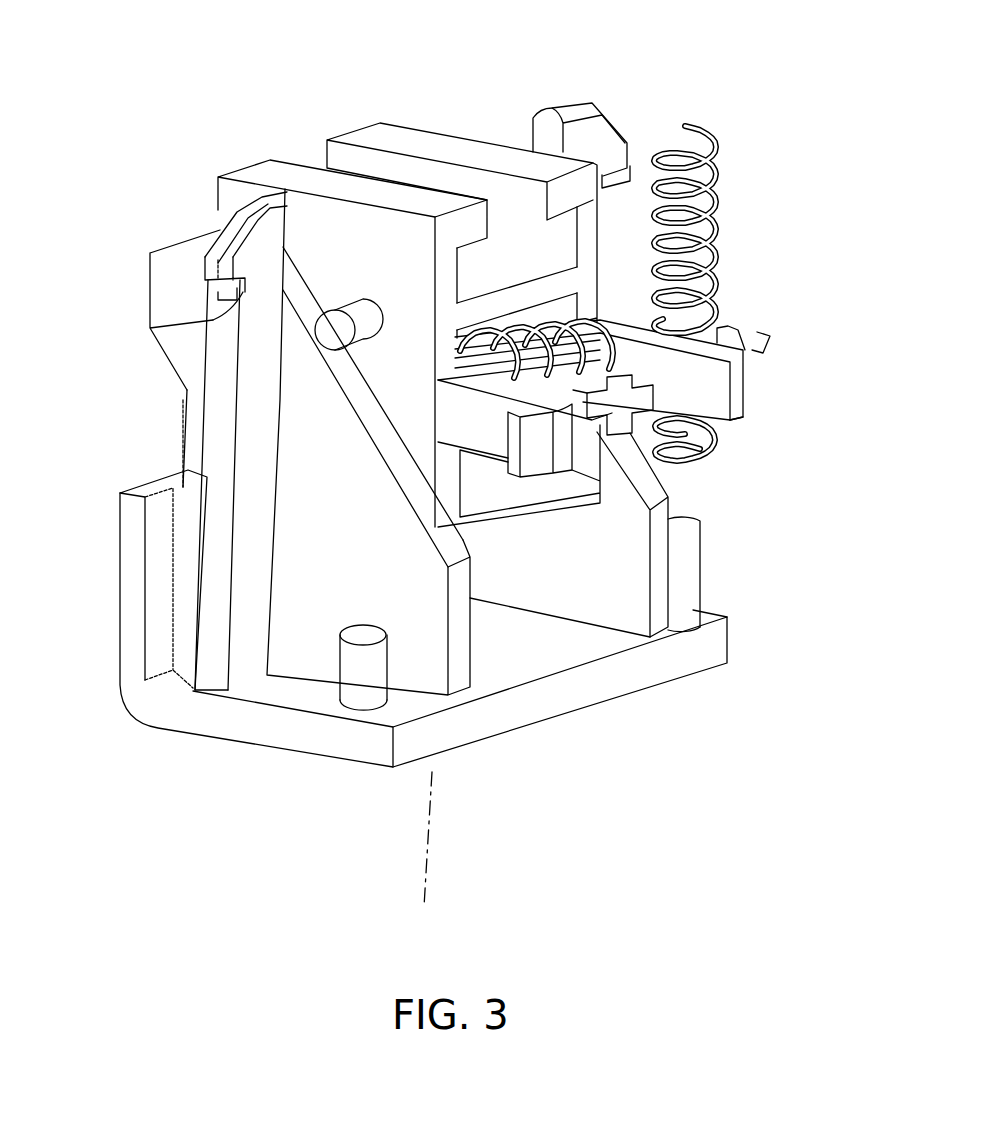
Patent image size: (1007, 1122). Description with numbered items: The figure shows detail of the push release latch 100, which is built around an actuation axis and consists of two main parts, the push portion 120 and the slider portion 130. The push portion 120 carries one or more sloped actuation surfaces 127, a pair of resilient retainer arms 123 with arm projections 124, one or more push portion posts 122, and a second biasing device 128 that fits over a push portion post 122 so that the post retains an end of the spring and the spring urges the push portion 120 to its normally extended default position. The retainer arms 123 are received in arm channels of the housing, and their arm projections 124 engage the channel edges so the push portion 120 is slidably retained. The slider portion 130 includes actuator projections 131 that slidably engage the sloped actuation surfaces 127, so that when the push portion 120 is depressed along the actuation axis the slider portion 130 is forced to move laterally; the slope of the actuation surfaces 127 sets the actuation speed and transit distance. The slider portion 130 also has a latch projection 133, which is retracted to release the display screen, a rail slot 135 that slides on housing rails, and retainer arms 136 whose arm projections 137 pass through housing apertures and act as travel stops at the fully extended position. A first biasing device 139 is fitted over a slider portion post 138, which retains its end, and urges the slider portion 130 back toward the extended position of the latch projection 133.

The push release latch 100 is at (183, 830).
The push portion 120 is at (645, 686).
The push portion posts 122 is at (358, 672).
The retainer arms 123 is at (205, 447).
The arm projections 124 is at (215, 320).
The sloped actuation surfaces 127 is at (658, 490).
The second biasing device 128 is at (710, 215).
The slider portion 130 is at (228, 172).
The actuator projections 131 is at (350, 312).
The latch projection 133 is at (150, 297).
The rail slot 135 is at (437, 272).
The retainer arms 136 is at (483, 460).
The arm projections 137 is at (760, 353).
The slider portion post 138 is at (652, 390).
The first biasing device 139 is at (735, 378).